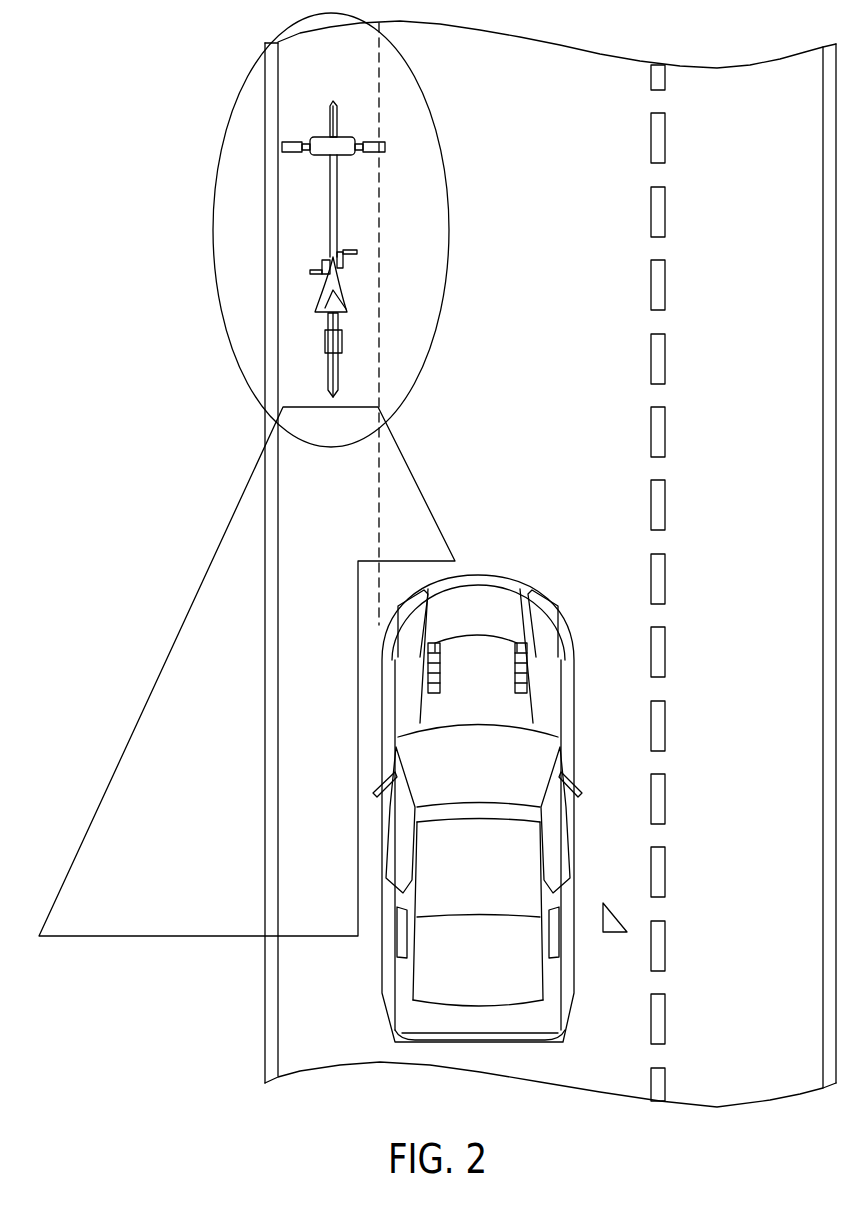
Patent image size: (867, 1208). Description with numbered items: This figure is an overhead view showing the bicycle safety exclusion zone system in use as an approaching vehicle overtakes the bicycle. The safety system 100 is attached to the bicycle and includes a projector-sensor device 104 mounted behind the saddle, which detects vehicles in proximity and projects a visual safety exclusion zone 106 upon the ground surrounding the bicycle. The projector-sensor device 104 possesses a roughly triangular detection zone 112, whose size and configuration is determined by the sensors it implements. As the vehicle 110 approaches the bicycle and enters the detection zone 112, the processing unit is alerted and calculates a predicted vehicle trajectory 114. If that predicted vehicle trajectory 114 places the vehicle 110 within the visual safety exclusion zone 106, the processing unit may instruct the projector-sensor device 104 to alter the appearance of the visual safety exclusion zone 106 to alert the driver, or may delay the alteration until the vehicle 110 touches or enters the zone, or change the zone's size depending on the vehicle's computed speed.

The safety system 100 is at (735, 574).
The projector-sensor device 104 is at (337, 296).
The visual safety exclusion zone 106 is at (450, 208).
The vehicle 110 is at (550, 692).
The detection zone 112 is at (122, 756).
The predicted vehicle trajectory 114 is at (381, 448).